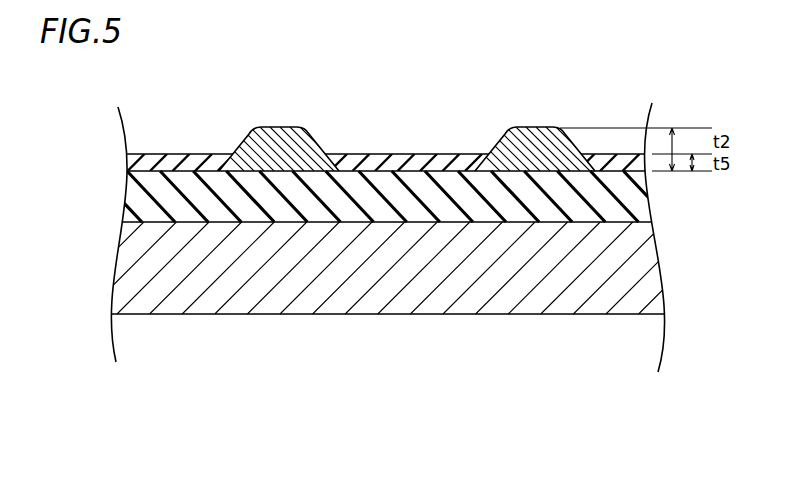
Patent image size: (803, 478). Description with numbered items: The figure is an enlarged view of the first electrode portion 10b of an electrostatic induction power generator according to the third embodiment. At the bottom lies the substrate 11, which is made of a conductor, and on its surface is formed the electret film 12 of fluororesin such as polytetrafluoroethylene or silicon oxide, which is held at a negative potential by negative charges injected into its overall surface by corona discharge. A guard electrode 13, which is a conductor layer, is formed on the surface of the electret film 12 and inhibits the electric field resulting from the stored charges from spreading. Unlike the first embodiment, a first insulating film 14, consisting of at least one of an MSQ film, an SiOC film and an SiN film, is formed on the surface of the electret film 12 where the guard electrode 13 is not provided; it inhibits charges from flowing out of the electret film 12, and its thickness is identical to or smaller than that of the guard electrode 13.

The first electrode portion 10b is at (619, 78).
The substrate 11 is at (133, 282).
The electret film 12 is at (145, 203).
The guard electrode 13 is at (280, 145).
The first insulating film 14 is at (188, 154).